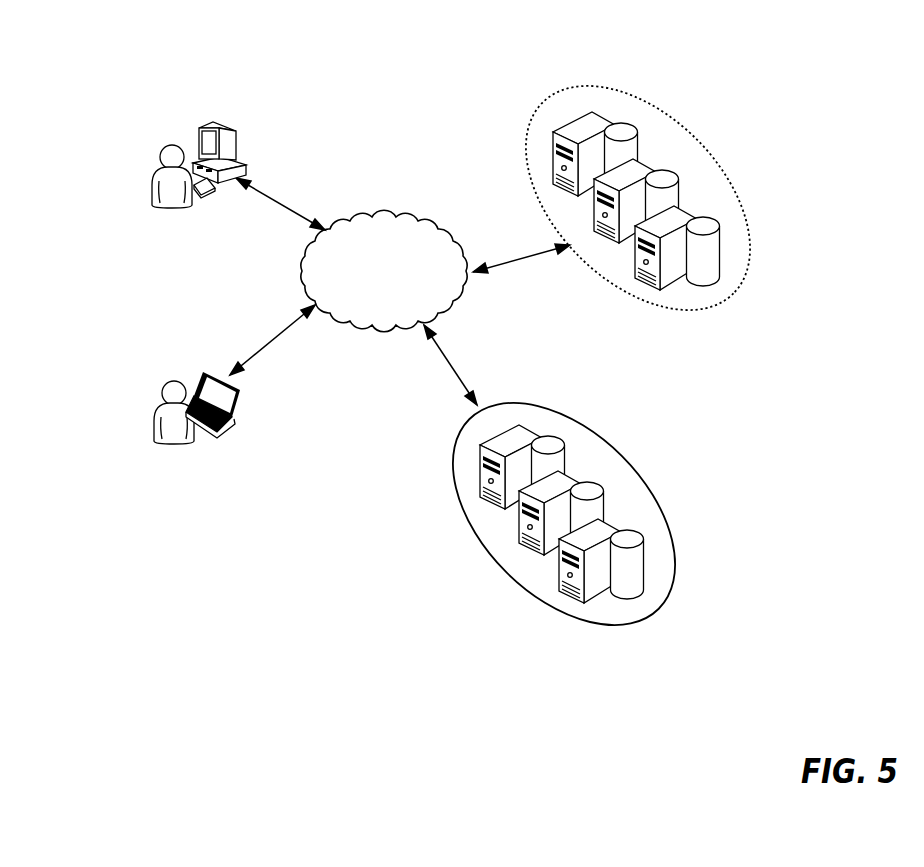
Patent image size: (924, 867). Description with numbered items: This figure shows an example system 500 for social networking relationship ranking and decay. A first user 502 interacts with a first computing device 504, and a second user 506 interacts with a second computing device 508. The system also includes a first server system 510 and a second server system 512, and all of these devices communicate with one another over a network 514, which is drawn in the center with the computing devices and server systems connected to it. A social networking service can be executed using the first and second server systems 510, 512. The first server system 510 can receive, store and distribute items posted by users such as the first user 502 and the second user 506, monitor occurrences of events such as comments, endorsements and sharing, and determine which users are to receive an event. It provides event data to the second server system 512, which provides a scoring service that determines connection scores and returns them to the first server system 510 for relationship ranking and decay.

The example system 500 is at (730, 75).
The first user 502 is at (152, 183).
The first computing device 504 is at (226, 128).
The second user 506 is at (155, 442).
The second computing device 508 is at (234, 418).
The first server system 510 is at (610, 442).
The second server system 512 is at (736, 192).
The network 514 is at (384, 216).